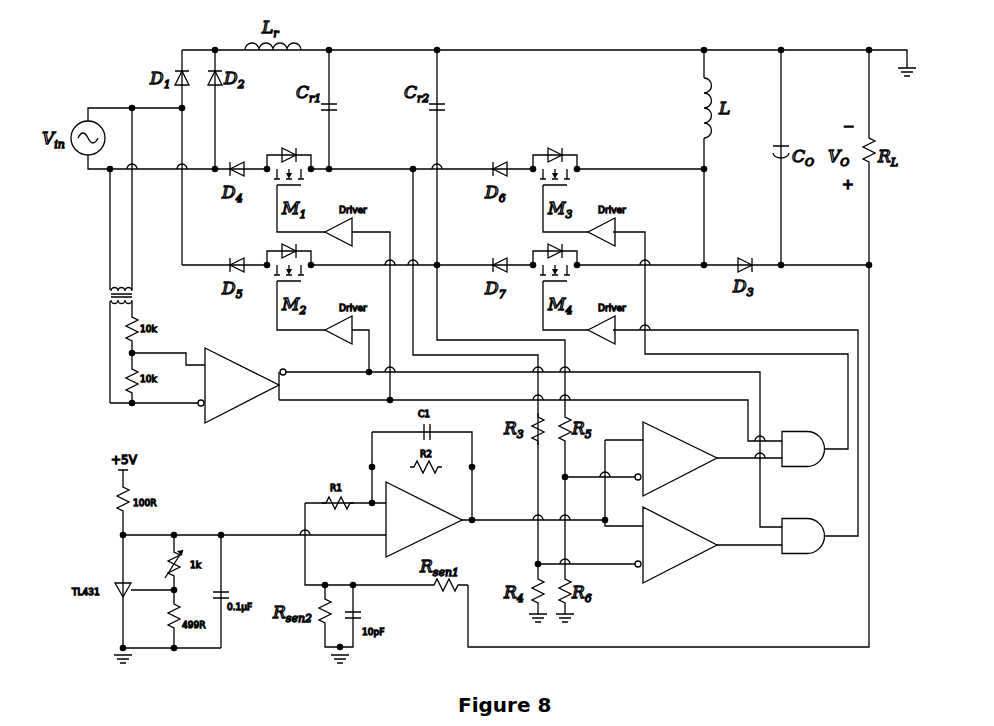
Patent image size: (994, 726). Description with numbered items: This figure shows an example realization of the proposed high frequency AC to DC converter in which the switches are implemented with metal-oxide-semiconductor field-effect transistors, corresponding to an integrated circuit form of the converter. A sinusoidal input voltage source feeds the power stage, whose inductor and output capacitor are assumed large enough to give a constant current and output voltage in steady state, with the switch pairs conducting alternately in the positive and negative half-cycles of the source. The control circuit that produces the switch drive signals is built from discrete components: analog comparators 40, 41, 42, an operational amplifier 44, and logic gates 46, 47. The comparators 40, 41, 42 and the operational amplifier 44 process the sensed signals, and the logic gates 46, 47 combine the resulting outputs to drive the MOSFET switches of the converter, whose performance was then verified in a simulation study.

The analog comparator 40 is at (238, 412).
The analog comparator 41 is at (694, 444).
The analog comparator 42 is at (675, 567).
The operational amplifier 44 is at (434, 531).
The logic gate 46 is at (798, 430).
The logic gate 47 is at (805, 557).